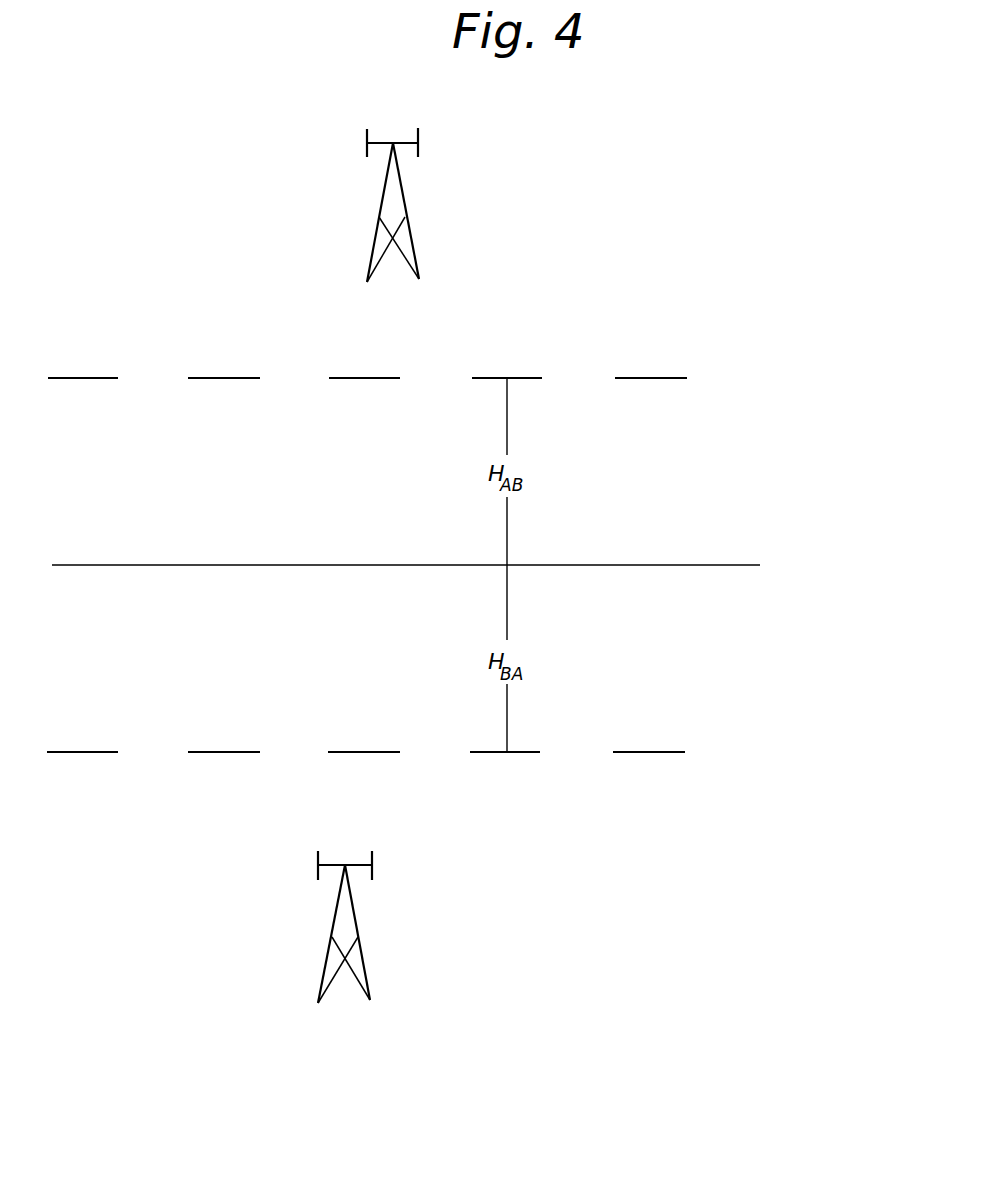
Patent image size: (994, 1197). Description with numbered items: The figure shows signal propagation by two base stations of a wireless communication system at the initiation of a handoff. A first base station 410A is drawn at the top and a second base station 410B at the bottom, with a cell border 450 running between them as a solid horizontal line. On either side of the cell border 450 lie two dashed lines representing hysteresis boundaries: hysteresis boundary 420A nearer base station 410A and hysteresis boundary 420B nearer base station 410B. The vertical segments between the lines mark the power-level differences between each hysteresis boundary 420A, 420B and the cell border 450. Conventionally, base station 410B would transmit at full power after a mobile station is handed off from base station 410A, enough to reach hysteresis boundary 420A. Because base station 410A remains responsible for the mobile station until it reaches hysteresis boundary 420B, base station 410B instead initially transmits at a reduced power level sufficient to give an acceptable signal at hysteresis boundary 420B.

The base station 410A is at (408, 238).
The base station 410B is at (362, 957).
The hysteresis boundary 420A is at (757, 378).
The hysteresis boundary 420B is at (755, 752).
The cell border 450 is at (760, 565).